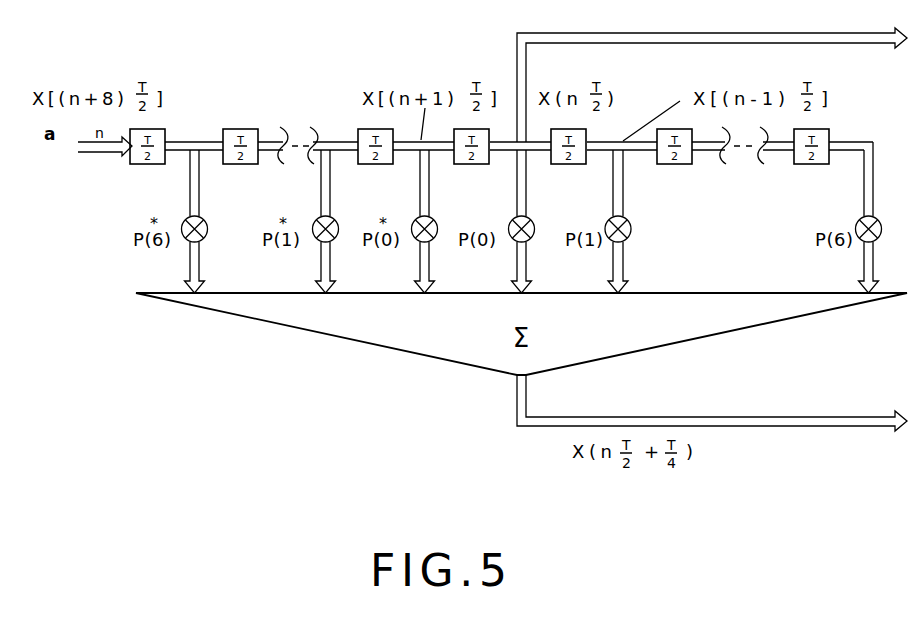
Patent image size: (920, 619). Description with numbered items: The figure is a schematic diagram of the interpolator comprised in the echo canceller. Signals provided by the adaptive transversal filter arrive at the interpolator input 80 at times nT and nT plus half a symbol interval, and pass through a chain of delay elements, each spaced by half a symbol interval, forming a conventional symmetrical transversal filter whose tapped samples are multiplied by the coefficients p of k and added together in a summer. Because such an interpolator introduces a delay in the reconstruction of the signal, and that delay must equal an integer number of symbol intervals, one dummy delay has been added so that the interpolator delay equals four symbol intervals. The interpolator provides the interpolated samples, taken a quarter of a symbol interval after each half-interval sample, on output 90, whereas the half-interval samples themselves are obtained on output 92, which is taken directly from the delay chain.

The input signal 80 is at (111, 155).
The output 90 is at (727, 427).
The output 92 is at (648, 33).